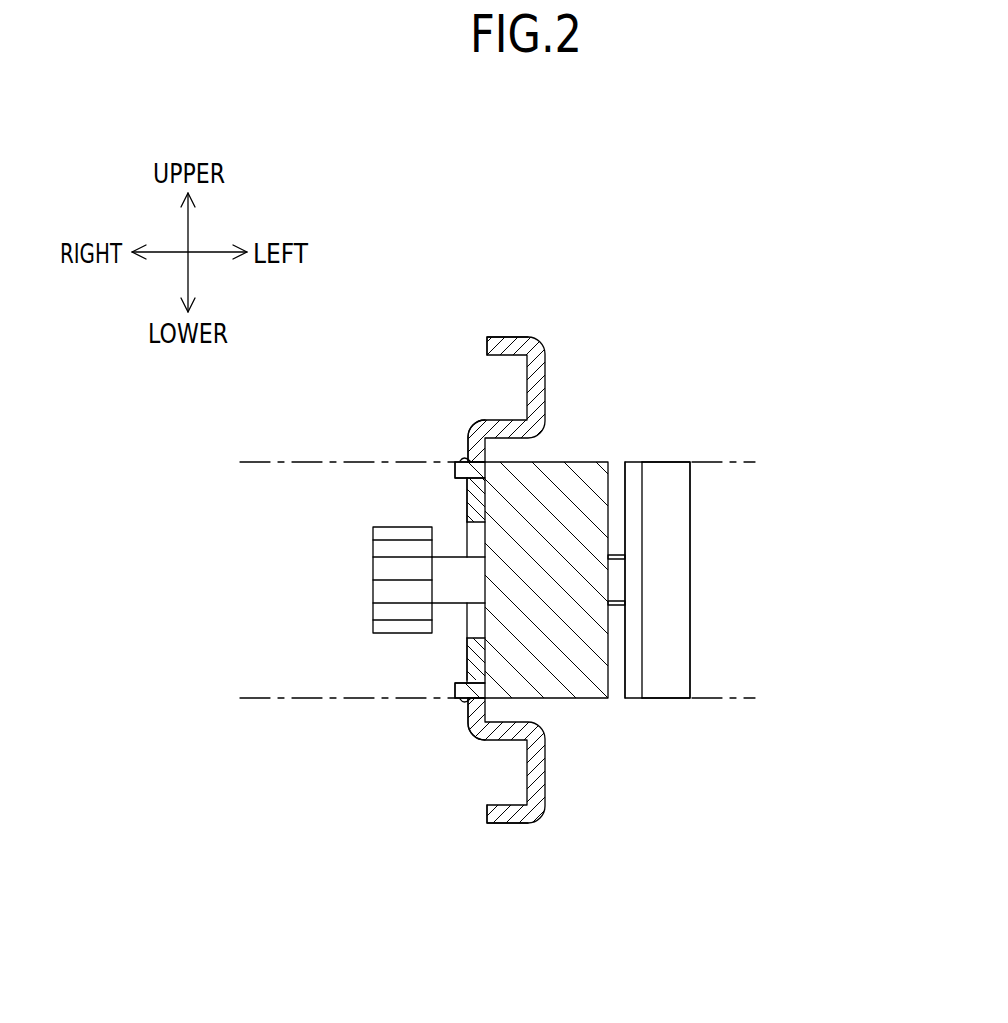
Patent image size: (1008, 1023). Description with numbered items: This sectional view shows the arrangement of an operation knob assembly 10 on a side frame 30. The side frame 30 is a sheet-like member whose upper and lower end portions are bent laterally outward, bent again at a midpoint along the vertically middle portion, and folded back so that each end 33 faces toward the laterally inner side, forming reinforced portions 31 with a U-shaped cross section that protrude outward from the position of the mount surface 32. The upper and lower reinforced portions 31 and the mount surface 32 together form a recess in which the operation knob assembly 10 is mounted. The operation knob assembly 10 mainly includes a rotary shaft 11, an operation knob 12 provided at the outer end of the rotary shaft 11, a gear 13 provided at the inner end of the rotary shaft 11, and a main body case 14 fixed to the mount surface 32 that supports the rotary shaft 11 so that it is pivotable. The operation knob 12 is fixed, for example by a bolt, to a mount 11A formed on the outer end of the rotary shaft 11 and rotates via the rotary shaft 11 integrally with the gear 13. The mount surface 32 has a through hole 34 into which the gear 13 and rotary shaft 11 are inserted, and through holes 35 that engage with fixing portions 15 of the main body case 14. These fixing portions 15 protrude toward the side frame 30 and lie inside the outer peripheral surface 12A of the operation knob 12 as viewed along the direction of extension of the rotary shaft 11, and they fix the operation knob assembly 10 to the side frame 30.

The operation knob assembly 10 is at (737, 500).
The rotary shaft 11 is at (446, 556).
The mount 11A is at (632, 698).
The operation knob 12 is at (690, 537).
The outer peripheral surface 12A is at (650, 462).
The gear 13 is at (383, 570).
The main body case 14 is at (566, 478).
The fixing portions 15 is at (458, 470).
The side frame 30 is at (558, 332).
The reinforced portions 31 is at (372, 337).
The mount surface 32 is at (483, 664).
The end 33 is at (487, 347).
The through hole 34 is at (470, 634).
The through holes 35 is at (465, 458).